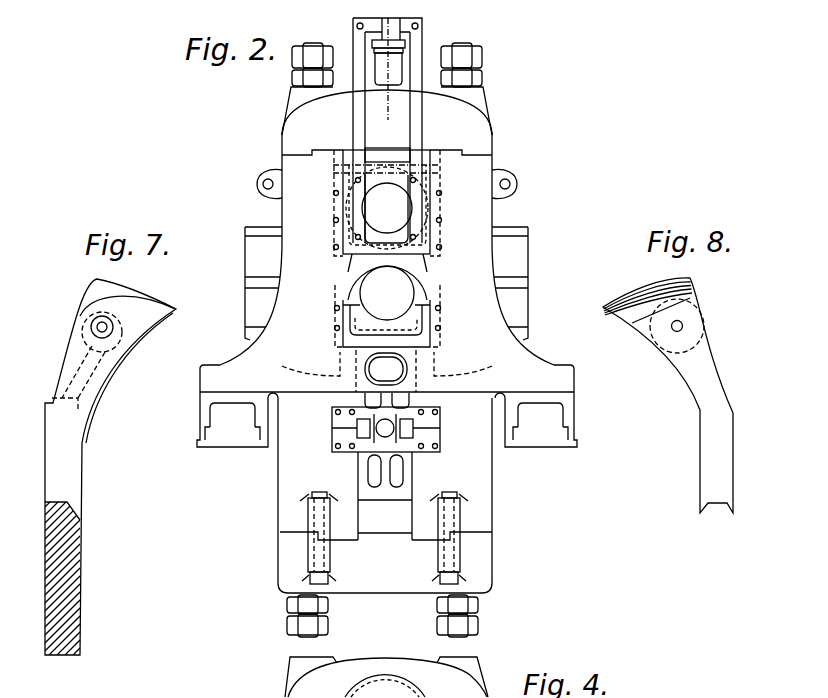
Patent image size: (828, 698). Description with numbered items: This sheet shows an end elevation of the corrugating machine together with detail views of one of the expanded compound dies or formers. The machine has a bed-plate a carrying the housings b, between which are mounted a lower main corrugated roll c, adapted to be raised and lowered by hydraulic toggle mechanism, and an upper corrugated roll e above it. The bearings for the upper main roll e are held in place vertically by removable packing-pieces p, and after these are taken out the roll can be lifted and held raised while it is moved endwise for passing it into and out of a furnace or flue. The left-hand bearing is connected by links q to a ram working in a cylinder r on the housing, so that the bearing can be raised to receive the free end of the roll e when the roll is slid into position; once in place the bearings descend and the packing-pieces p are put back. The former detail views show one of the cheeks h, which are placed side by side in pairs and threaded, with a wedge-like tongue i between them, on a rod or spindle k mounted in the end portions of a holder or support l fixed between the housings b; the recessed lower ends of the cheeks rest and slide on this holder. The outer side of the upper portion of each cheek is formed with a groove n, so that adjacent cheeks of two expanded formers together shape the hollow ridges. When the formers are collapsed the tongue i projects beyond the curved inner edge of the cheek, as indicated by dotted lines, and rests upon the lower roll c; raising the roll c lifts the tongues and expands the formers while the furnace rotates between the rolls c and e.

In FIG. 2, the bed-plate a is at (387, 419).
In FIG. 2, the housings b is at (387, 239).
In FIG. 2, the lower main corrugated roll c is at (388, 300).
In FIG. 2, the upper corrugated roll e is at (388, 203).
In FIG. 2, the packing-pieces p is at (377, 158).
In FIG. 2, the links q is at (362, 110).
In FIG. 2, the cylinder r is at (388, 69).
In FIG. 7, the cheeks h is at (70, 433).
In FIG. 8, the cheeks h is at (708, 431).
In FIG. 7, the wedge-like tongue i is at (148, 306).
In FIG. 8, the wedge-like tongue i is at (603, 335).
In FIG. 7, the rod or spindle k is at (90, 333).
In FIG. 8, the rod or spindle k is at (685, 325).
In FIG. 7, the holder or support l is at (70, 557).
In FIG. 8, the groove n is at (692, 290).